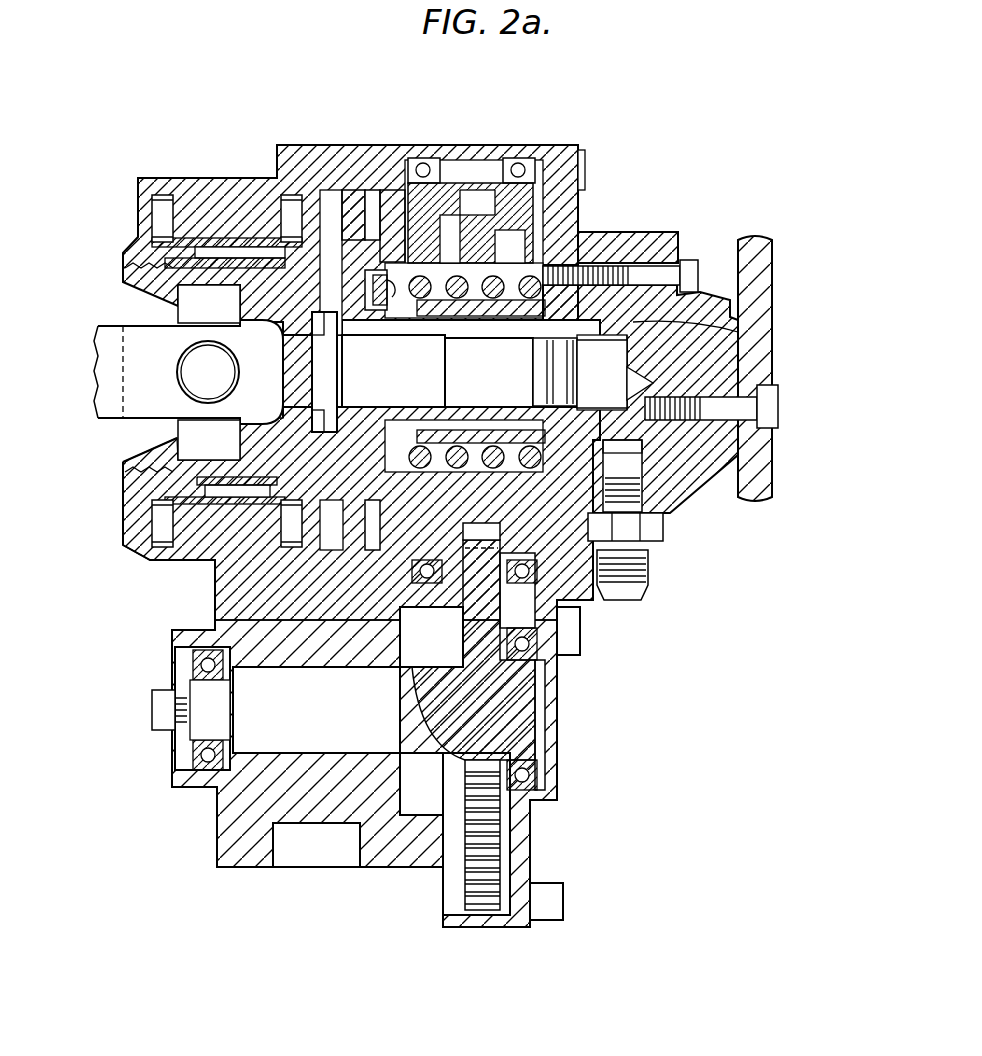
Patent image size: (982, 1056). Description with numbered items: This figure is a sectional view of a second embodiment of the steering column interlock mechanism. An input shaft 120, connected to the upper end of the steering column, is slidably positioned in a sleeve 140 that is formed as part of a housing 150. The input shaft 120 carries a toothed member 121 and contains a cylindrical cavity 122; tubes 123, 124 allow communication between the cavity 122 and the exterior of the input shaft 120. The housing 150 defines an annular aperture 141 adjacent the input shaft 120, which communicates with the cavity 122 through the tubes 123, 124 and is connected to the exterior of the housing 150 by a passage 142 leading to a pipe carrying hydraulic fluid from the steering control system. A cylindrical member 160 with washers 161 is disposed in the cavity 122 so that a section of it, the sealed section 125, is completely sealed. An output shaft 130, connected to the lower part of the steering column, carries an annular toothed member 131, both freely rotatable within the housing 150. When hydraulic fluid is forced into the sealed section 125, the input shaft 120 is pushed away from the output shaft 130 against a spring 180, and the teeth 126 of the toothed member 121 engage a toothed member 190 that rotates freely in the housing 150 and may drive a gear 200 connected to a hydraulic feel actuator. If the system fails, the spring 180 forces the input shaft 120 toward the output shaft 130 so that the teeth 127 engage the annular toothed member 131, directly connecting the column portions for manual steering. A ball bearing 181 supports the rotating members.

The input shaft 120 is at (727, 370).
The toothed member 121 is at (363, 148).
The cavity 122 is at (597, 392).
The tube 123 is at (680, 260).
The tube 124 is at (683, 478).
The sealed section 125 is at (648, 362).
The teeth 126 is at (403, 148).
The teeth 127 is at (333, 145).
The output shaft 130 is at (162, 347).
The annular toothed member 131 is at (303, 143).
The sleeve 140 is at (447, 307).
The annular aperture 141 is at (592, 372).
The passage 142 is at (640, 537).
The housing 150 is at (565, 213).
The cylindrical member 160 is at (398, 401).
The washers 161 is at (572, 378).
The spring 180 is at (407, 297).
The ball bearing 181 is at (468, 150).
The toothed member 190 is at (575, 195).
The gear 200 is at (482, 818).